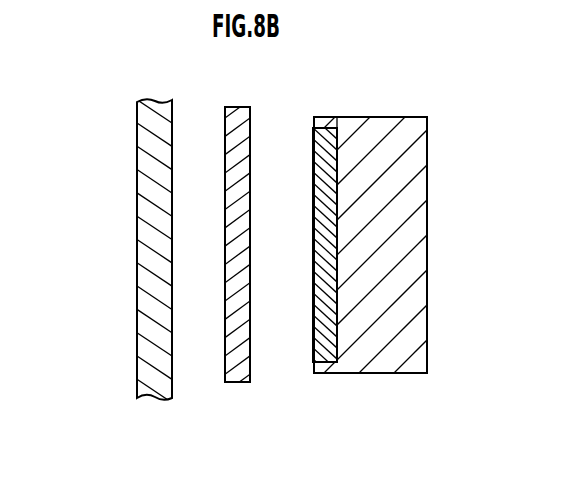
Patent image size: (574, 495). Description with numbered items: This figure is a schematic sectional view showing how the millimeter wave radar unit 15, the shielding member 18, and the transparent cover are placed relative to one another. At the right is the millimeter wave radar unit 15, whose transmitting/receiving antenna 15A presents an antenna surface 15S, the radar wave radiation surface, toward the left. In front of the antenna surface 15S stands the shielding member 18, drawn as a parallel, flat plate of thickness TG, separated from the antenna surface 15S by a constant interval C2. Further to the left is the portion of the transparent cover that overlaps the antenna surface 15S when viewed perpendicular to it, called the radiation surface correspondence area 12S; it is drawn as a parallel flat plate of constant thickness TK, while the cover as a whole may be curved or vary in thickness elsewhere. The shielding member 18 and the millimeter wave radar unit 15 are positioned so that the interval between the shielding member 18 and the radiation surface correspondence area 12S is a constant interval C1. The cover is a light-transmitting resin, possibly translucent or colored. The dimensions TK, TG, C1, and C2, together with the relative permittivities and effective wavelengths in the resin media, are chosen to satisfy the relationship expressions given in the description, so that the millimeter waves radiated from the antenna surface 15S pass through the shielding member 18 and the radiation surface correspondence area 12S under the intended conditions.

The radiation surface correspondence area 12S is at (137, 110).
The shielding member 18 is at (237, 107).
The millimeter wave radar unit 15 is at (397, 117).
The antenna surface 15S is at (313, 145).
The transmitting/receiving antenna 15A is at (319, 127).
The interval between radiation surface correspondence area and shielding member C1 is at (225, 339).
The interval between shielding member and antenna surface C2 is at (313, 338).
The thickness of shielding member TG is at (250, 382).
The thickness of radiation surface correspondence area TK is at (172, 405).